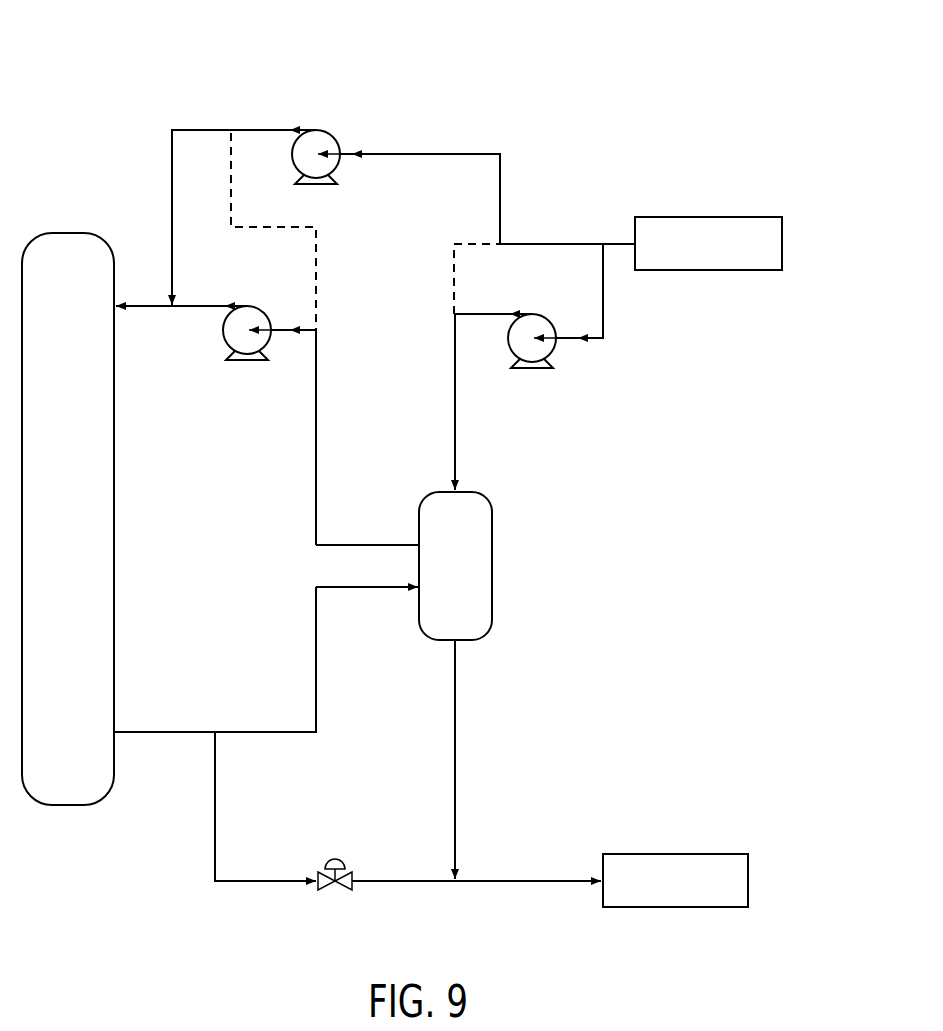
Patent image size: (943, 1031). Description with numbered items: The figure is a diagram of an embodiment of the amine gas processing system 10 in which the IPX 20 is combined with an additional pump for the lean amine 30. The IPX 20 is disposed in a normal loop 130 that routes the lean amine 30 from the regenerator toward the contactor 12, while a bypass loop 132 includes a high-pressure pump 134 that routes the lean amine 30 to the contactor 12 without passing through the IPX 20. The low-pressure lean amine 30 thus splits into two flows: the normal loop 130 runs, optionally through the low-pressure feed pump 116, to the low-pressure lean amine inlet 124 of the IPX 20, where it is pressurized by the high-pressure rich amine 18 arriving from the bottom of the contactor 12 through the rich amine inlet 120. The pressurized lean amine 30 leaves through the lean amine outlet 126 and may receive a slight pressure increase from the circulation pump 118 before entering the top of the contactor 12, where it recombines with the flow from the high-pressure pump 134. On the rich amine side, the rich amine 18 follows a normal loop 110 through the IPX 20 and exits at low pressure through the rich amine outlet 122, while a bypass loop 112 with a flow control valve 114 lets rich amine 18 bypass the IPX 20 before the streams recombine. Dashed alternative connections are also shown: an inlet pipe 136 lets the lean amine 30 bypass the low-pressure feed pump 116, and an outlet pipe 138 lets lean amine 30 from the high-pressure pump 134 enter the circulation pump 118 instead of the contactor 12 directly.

The amine gas processing system 10 is at (497, 72).
The contactor 12 is at (114, 462).
The rich amine 18 is at (676, 854).
The IPX 20 is at (492, 565).
The lean amine 30 is at (708, 217).
The normal loop 110 is at (332, 733).
The bypass loop 112 is at (227, 808).
The flow control valve 114 is at (340, 859).
The low-pressure feed pump 116 is at (508, 341).
The circulation pump 118 is at (257, 306).
The rich amine inlet 120 is at (333, 588).
The rich amine outlet 122 is at (456, 733).
The lean amine inlet 124 is at (455, 445).
The lean amine outlet 126 is at (333, 545).
The normal loop 130 is at (604, 318).
The bypass loop 132 is at (430, 154).
The high-pressure pump 134 is at (328, 133).
The inlet pipe 136 is at (475, 243).
The outlet pipe 138 is at (317, 280).